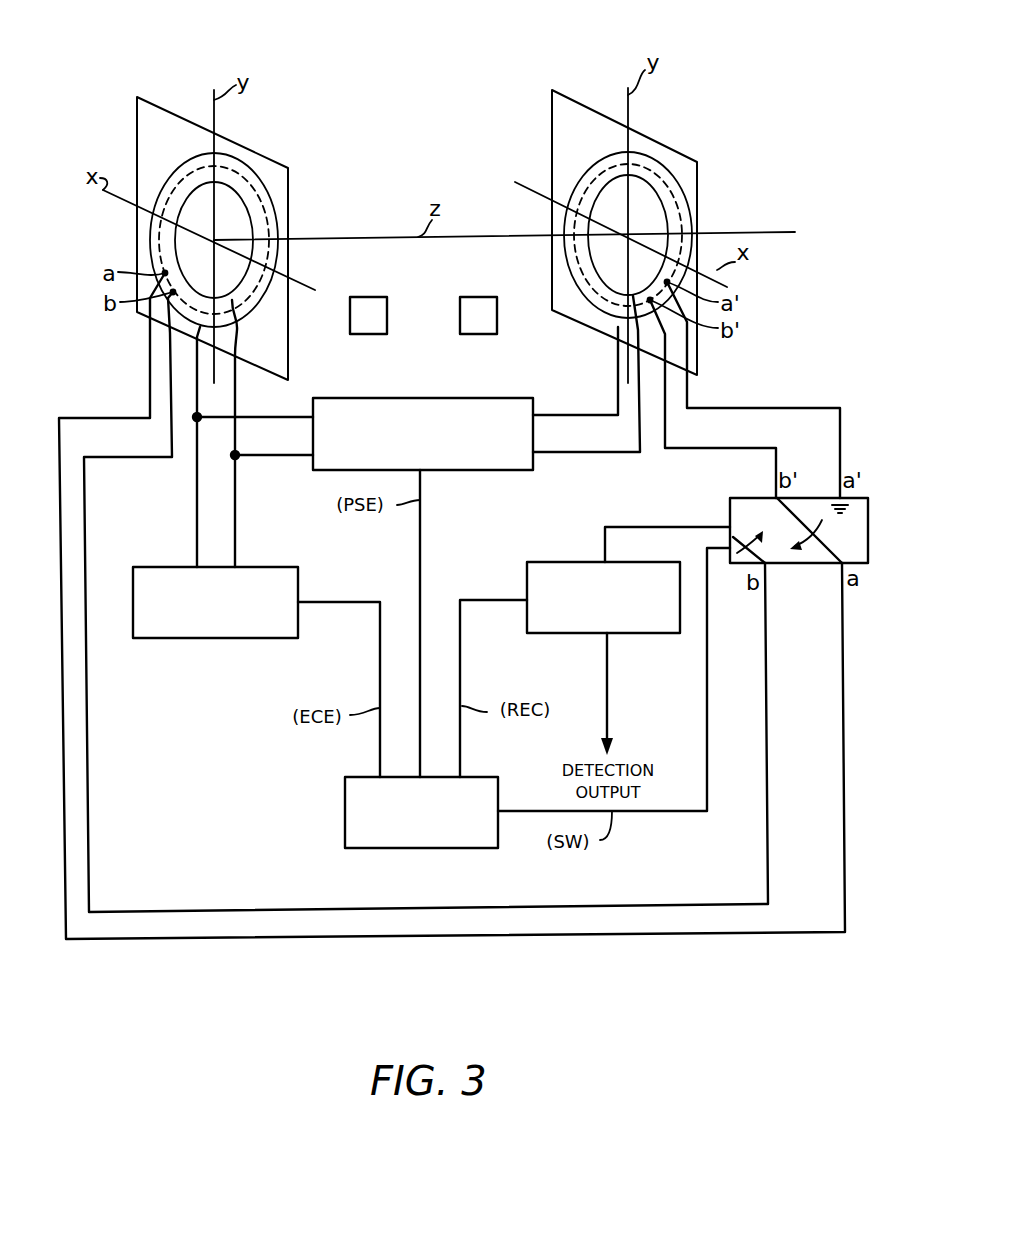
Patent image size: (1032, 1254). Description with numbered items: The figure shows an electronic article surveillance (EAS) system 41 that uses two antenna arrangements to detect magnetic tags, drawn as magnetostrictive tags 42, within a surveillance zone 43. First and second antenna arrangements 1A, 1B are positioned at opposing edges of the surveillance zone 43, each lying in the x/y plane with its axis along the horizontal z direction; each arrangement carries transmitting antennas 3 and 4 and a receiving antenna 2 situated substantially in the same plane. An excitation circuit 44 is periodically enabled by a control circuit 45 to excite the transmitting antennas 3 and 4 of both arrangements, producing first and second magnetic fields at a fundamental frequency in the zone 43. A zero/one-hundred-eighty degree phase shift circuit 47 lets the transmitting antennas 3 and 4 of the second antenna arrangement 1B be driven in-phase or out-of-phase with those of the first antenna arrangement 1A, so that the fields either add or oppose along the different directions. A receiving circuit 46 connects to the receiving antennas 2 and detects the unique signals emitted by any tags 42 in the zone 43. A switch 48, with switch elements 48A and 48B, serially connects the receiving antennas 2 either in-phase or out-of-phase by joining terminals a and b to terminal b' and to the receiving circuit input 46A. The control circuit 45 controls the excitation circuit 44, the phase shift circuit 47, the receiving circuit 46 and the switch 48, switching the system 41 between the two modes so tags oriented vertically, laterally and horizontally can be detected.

The first antenna arrangement 1A is at (253, 150).
The second antenna arrangement 1B is at (667, 148).
The receiving antenna 2 is at (267, 210).
The transmitting antenna 3 is at (192, 185).
The transmitting antenna 4 is at (267, 188).
The EAS system 41 is at (790, 299).
The magnetostrictive tags 42 is at (460, 310).
The surveillance zone 43 is at (418, 140).
The excitation circuit 44 is at (203, 640).
The control circuit 45 is at (345, 818).
The receiving circuit 46 is at (650, 633).
The receiving circuit input 46A is at (605, 543).
The 0°/180° phase shift circuit 47 is at (513, 398).
The switch 48 is at (862, 548).
The switch element 48A is at (747, 537).
The switch element 48B is at (832, 535).